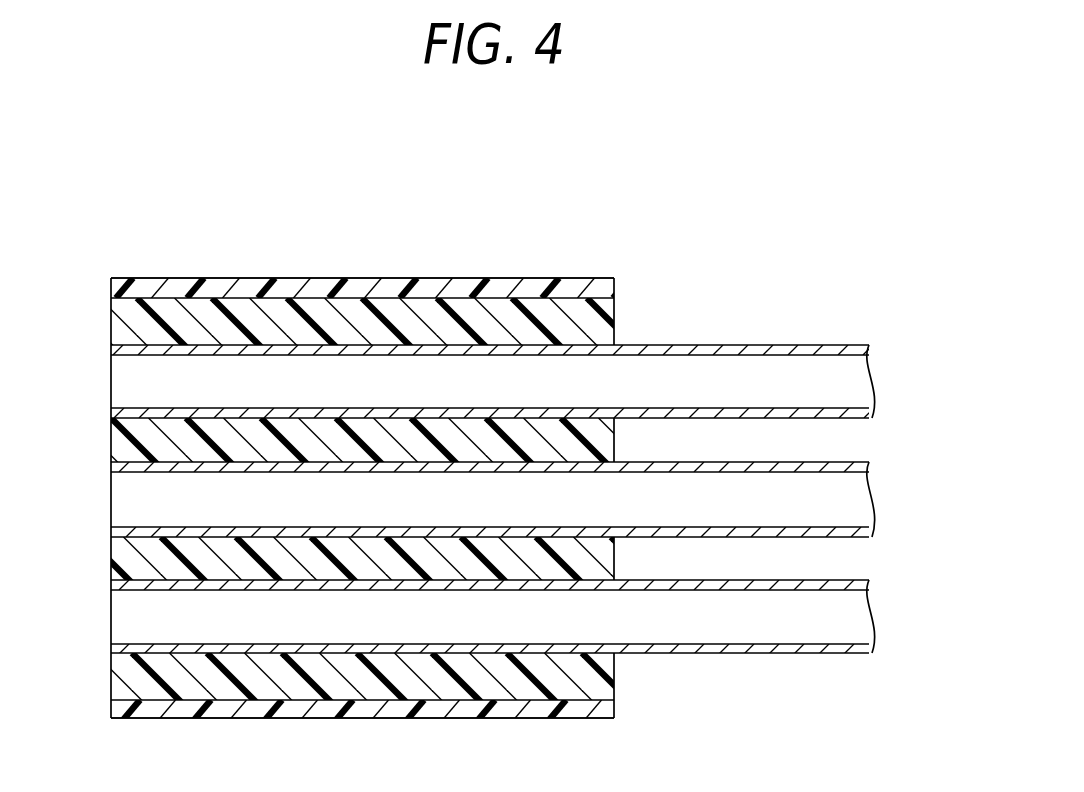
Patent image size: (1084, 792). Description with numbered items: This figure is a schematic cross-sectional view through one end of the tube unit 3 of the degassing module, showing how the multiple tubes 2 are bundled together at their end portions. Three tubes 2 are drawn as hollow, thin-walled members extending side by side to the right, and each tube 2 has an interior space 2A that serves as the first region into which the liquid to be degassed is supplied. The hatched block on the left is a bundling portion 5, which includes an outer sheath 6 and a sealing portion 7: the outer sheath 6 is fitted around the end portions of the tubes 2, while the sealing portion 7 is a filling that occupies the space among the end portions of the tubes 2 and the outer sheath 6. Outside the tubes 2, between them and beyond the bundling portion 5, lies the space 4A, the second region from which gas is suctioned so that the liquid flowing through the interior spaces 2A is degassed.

The tube unit 3 is at (634, 205).
The bundling portion 5 is at (388, 278).
The outer sheath 6 is at (111, 294).
The sealing portion 7 is at (111, 320).
The tube 2 is at (714, 345).
The interior space 2A is at (124, 615).
The space outside the tubes 4A is at (852, 327).